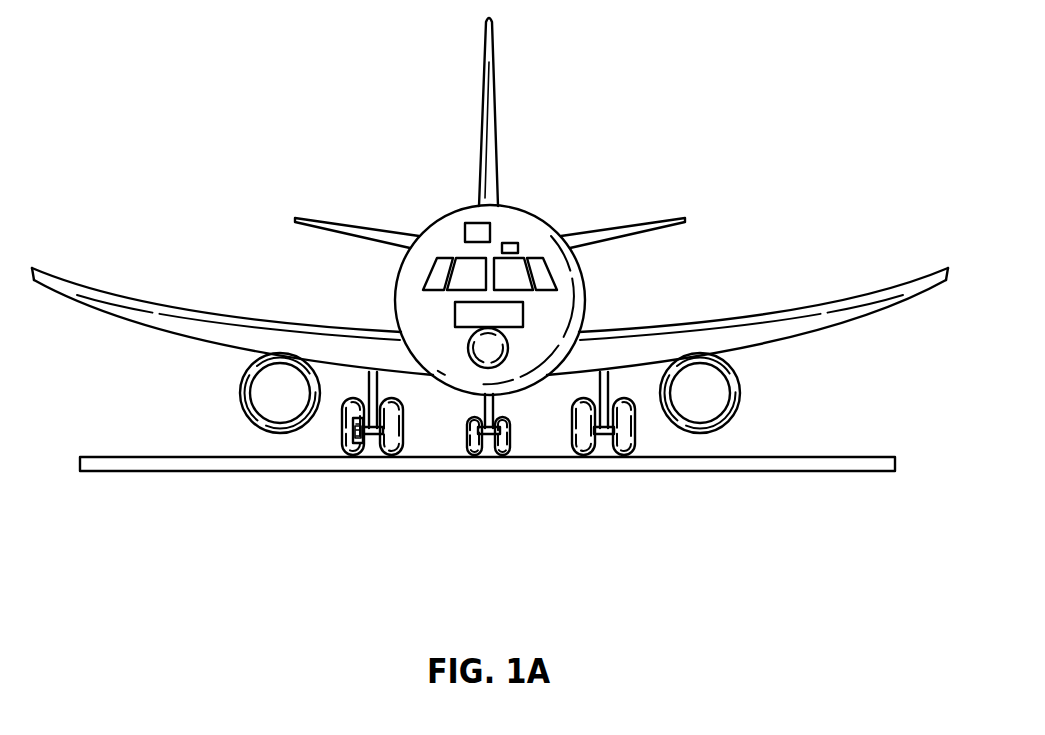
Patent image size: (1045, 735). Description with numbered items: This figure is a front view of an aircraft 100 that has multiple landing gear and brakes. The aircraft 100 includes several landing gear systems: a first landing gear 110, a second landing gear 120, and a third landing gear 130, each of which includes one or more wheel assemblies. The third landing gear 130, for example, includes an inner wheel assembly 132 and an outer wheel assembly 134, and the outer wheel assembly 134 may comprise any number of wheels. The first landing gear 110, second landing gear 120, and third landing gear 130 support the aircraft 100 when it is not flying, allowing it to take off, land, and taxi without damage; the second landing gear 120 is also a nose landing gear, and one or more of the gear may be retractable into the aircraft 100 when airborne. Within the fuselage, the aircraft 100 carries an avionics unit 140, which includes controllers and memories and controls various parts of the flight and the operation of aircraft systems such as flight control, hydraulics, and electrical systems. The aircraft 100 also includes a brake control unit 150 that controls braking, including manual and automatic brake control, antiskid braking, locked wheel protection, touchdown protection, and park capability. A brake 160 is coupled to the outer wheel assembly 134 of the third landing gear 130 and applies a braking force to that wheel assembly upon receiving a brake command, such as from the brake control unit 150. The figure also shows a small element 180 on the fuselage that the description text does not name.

The aircraft 100 is at (335, 60).
The first landing gear 110 is at (638, 440).
The second landing gear 120 is at (510, 445).
The third landing gear 130 is at (362, 486).
The inner wheel assembly 132 is at (398, 450).
The outer wheel assembly 134 is at (355, 448).
The avionics unit 140 is at (490, 233).
The brake control unit (BCU) 150 is at (523, 314).
The brake 160 is at (358, 450).
The indicator 180 is at (518, 249).